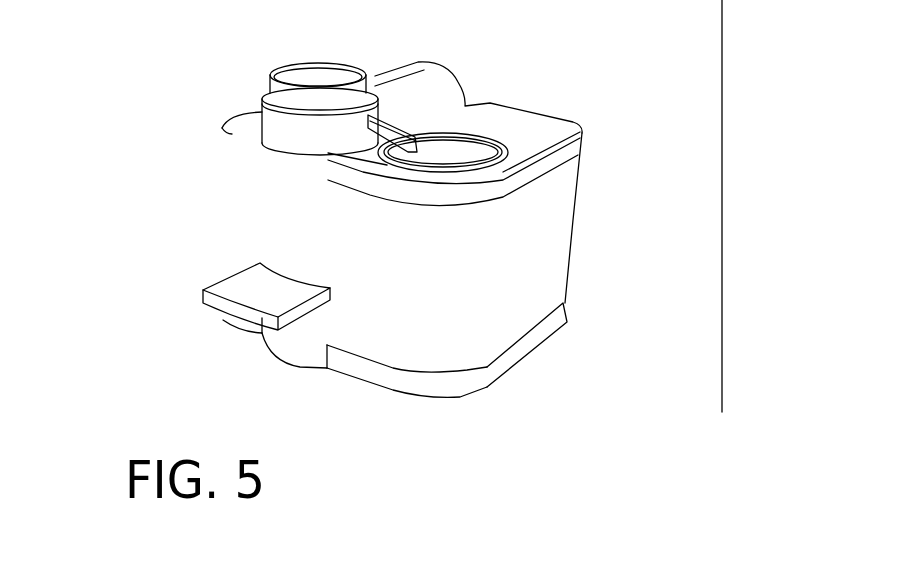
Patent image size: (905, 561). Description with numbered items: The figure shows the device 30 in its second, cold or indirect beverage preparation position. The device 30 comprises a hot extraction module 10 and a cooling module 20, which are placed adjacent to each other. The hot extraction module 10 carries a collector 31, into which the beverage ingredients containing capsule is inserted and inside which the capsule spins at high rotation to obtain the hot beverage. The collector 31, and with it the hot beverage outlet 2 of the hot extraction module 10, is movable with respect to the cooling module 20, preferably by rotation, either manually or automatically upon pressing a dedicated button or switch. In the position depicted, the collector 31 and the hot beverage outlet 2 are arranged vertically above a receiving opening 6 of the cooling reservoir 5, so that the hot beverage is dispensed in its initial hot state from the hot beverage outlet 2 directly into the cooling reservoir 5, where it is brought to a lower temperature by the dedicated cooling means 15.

The hot beverage outlet 2 is at (415, 152).
The cooling reservoir 5 is at (527, 253).
The receiving opening 6 is at (455, 155).
The hot extraction module 10 is at (220, 170).
The cooling means 15 is at (407, 355).
The cooling module 20 is at (578, 176).
The device 30 is at (722, 183).
The collector 31 is at (305, 133).